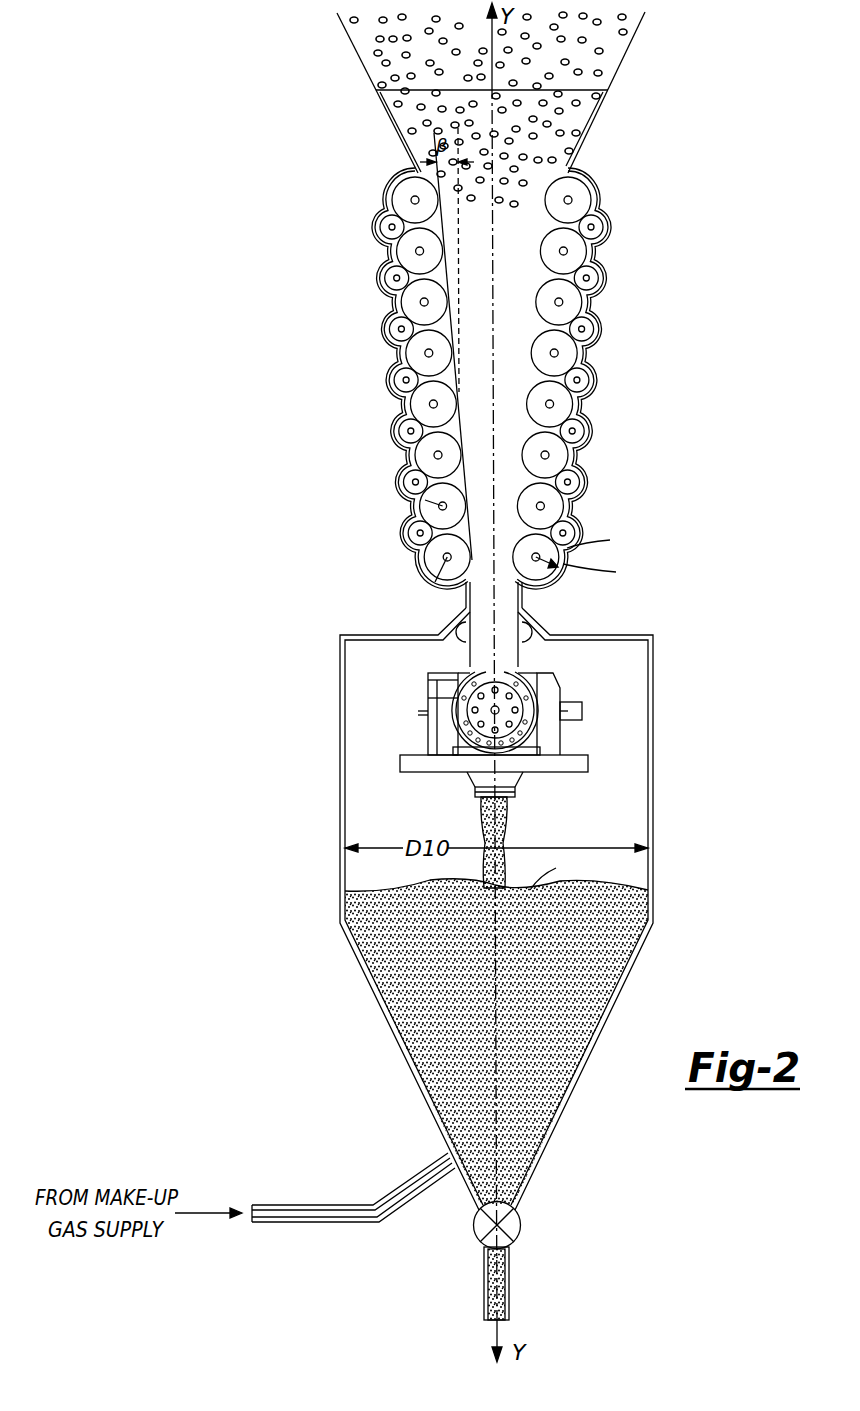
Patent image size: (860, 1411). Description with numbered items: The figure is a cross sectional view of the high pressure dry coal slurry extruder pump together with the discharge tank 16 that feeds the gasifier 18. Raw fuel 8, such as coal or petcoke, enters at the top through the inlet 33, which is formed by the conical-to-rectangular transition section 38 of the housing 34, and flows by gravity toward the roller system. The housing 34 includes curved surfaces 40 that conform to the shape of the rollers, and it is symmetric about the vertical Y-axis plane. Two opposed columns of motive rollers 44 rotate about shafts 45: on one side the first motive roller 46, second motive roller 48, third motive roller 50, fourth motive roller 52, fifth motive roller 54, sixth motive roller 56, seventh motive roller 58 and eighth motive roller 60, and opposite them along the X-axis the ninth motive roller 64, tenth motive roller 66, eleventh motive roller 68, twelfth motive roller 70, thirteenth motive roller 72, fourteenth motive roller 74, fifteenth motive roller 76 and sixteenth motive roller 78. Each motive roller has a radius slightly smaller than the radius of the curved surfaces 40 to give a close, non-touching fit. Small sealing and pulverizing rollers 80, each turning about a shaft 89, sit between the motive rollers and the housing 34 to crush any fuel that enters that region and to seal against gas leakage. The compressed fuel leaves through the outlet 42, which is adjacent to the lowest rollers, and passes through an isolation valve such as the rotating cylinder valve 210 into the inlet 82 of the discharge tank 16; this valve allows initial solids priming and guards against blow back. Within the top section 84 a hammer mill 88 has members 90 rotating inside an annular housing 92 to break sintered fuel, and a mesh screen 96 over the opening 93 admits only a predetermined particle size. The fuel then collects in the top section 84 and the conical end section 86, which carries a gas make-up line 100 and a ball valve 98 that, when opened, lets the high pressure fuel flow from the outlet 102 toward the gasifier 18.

The raw fuel 8 is at (600, 87).
The discharge tank 16 is at (298, 794).
The gasifier 18 is at (410, 1338).
The inlet 33 is at (588, 98).
The housing 34 is at (600, 163).
The conical-to-rectangular transition section 38 is at (382, 120).
The curved surfaces 40 is at (602, 222).
The outlet 42 is at (512, 600).
The motive rollers 44 is at (523, 185).
The shafts 45 is at (442, 505).
The first motive roller 46 is at (402, 193).
The second motive roller 48 is at (408, 255).
The third motive roller 50 is at (408, 305).
The fourth motive roller 52 is at (410, 357).
The fifth motive roller 54 is at (417, 403).
The sixth motive roller 56 is at (425, 458).
The seventh motive roller 58 is at (425, 507).
The eighth motive roller 60 is at (433, 558).
The ninth motive roller 64 is at (583, 193).
The tenth motive roller 66 is at (577, 255).
The eleventh motive roller 68 is at (577, 305).
The twelfth motive roller 70 is at (573, 355).
The thirteenth motive roller 72 is at (570, 408).
The fourteenth motive roller 74 is at (567, 458).
The fifteenth motive roller 76 is at (562, 505).
The sixteenth motive roller 78 is at (527, 545).
The sealing and pulverizing rollers 80 is at (382, 220).
The inlet 82 is at (505, 658).
The top section 84 is at (652, 770).
The conical end section 86 is at (597, 968).
The hammer mill 88 is at (499, 726).
The shaft 89 is at (592, 225).
The members 90 is at (517, 678).
The annular housing 92 is at (545, 730).
The opening 93 is at (540, 773).
The mesh screen 96 is at (518, 767).
The ball valve 98 is at (515, 1227).
The gas make-up line 100 is at (327, 1222).
The outlet 102 is at (510, 1275).
The rotating cylinder valve 210 is at (467, 638).